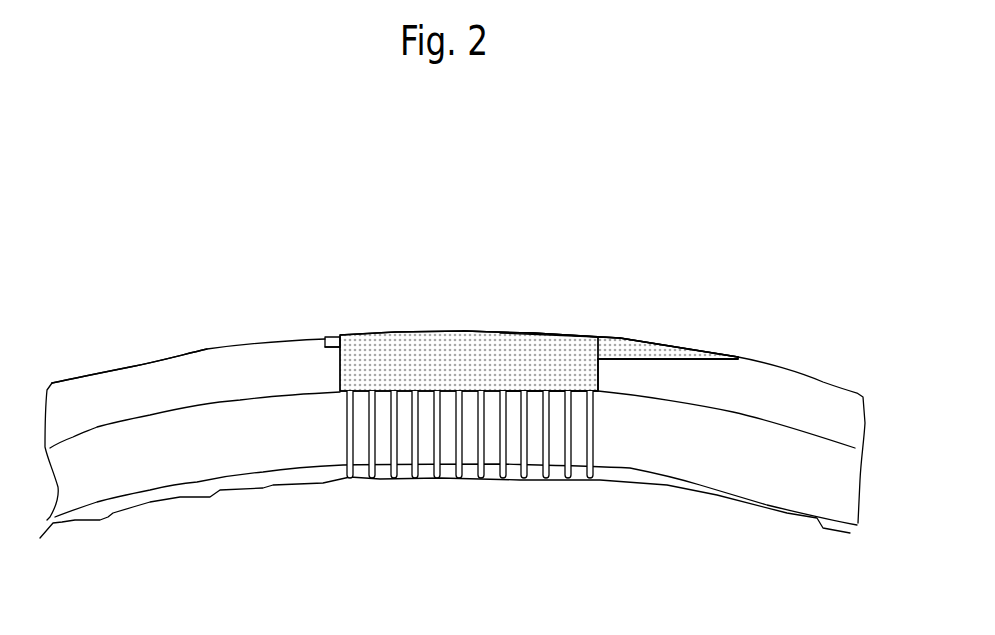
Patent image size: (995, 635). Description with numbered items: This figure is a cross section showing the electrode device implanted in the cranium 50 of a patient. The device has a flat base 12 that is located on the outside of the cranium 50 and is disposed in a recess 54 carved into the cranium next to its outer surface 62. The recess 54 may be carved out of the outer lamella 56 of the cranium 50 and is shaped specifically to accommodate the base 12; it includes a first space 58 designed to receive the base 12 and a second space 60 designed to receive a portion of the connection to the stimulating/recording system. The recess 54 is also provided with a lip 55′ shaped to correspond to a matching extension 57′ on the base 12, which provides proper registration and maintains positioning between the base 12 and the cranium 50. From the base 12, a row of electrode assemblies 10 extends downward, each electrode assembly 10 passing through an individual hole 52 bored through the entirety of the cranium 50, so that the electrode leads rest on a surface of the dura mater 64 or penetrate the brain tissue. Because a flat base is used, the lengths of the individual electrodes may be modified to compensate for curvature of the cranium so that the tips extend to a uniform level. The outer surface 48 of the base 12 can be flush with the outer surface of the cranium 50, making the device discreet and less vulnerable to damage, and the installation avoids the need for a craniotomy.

The electrode assembly 10 is at (543, 481).
The base 12 is at (410, 367).
The outer surface of the base 48 is at (587, 335).
The cranium 50 is at (722, 447).
The hole 52 is at (342, 442).
The recess 54 is at (592, 378).
The outer lamella 56 is at (120, 395).
The first space 58 is at (470, 388).
The second space 60 is at (640, 357).
The outer surface of the cranium 62 is at (207, 348).
The dura mater 64 is at (352, 493).
The extension 57′ is at (338, 340).
The lip 55′ is at (333, 352).